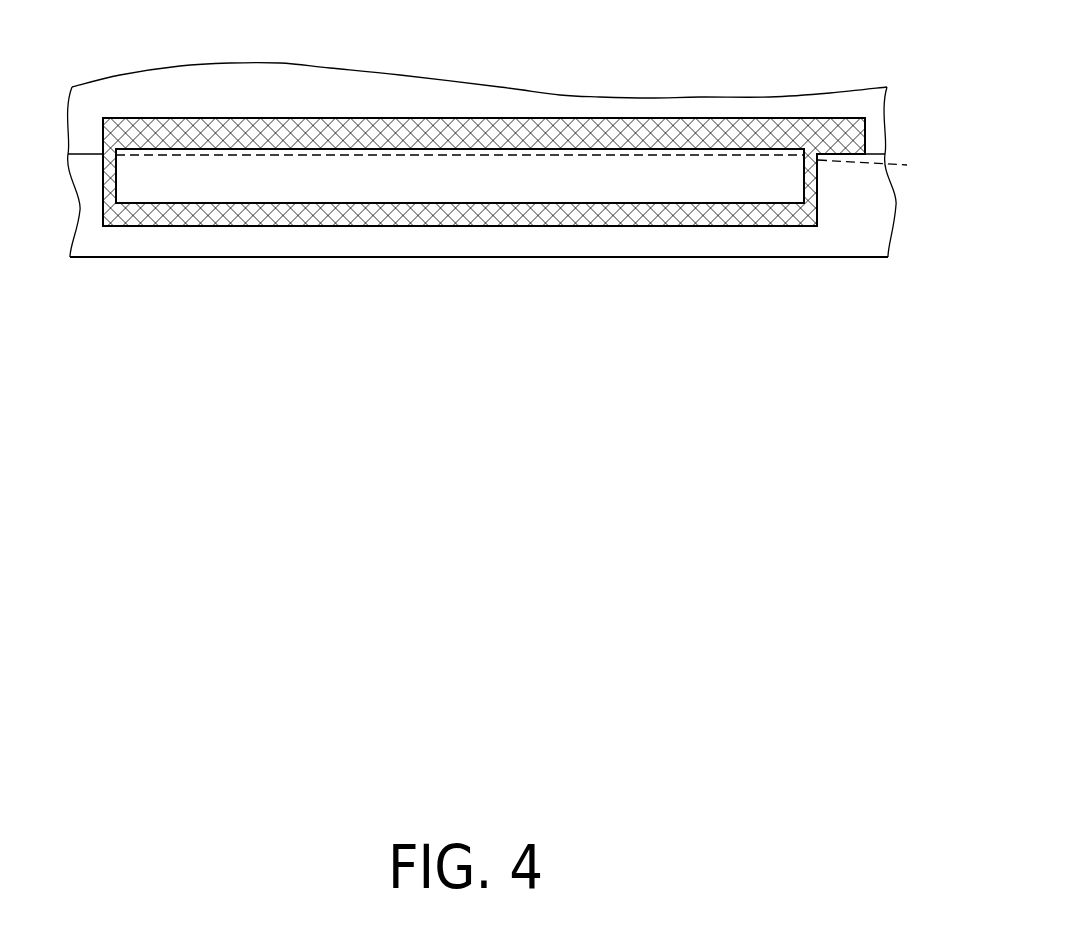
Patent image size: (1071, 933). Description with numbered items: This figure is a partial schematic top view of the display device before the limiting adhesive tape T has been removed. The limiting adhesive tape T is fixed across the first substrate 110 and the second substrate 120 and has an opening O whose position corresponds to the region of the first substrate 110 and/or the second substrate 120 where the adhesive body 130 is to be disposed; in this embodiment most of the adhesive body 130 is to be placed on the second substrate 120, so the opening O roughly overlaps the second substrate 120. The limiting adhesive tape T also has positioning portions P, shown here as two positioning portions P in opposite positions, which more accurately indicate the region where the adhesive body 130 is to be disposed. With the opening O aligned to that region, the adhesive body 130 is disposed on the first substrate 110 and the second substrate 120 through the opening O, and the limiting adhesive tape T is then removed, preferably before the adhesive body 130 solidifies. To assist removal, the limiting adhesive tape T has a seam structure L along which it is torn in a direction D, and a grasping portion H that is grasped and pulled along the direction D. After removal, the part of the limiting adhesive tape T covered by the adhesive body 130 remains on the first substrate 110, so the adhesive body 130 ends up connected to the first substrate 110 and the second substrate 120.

The first substrate 110 is at (867, 102).
The second substrate 120 is at (872, 227).
The adhesive body 130 is at (182, 187).
The grasping portion H is at (850, 137).
The seam structure L is at (522, 165).
The limiting adhesive tape T is at (628, 130).
The opening O is at (266, 196).
The positioning portion P is at (116, 182).
The direction D is at (525, 32).